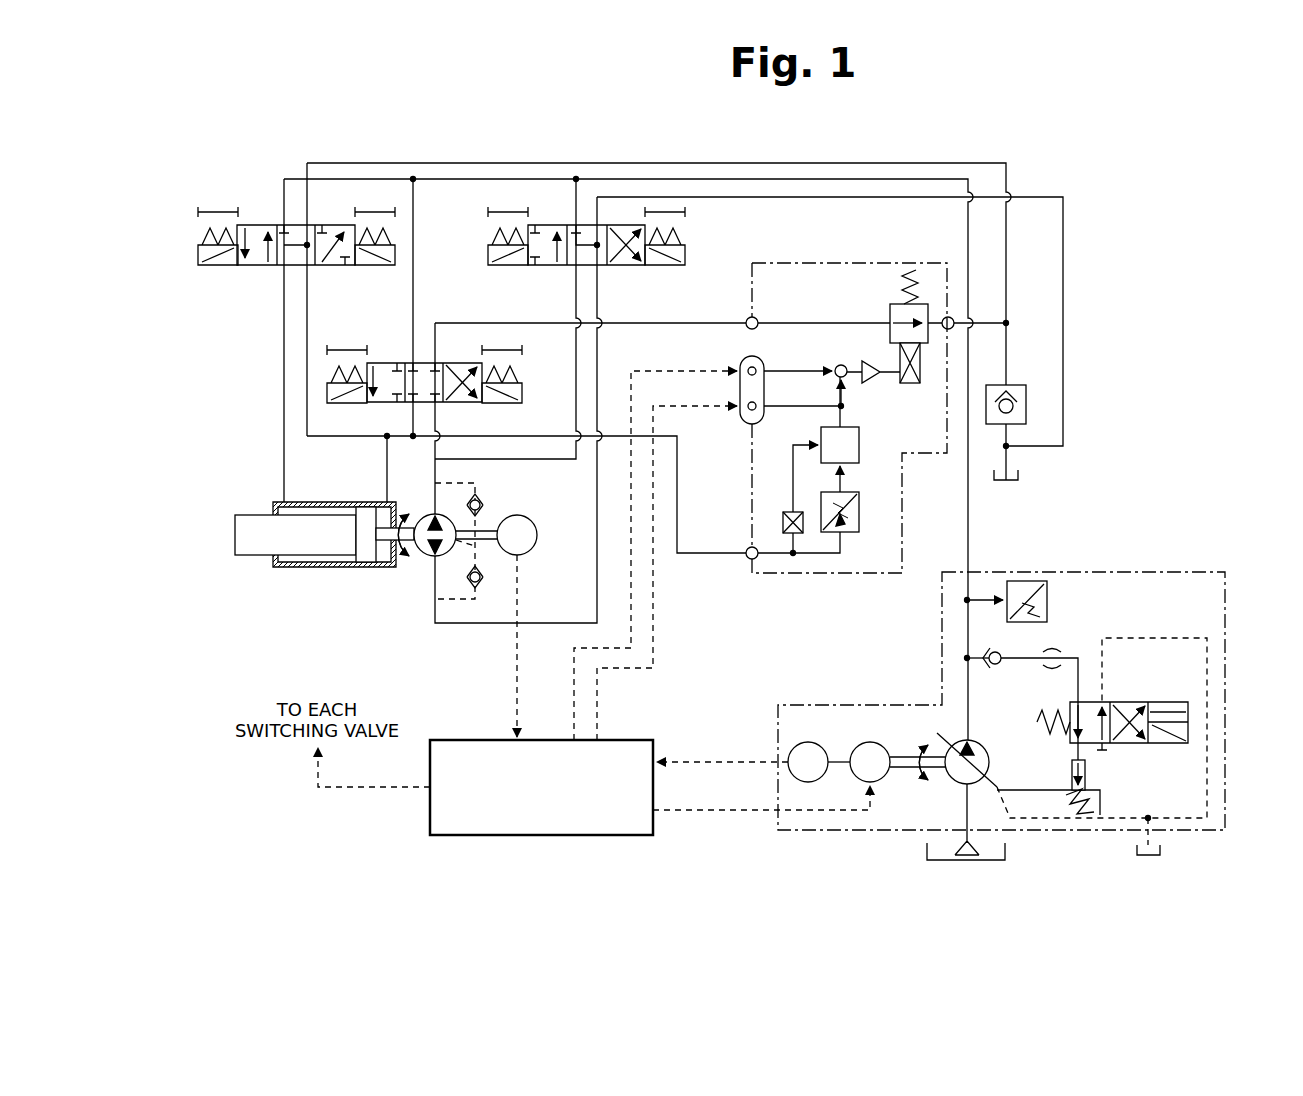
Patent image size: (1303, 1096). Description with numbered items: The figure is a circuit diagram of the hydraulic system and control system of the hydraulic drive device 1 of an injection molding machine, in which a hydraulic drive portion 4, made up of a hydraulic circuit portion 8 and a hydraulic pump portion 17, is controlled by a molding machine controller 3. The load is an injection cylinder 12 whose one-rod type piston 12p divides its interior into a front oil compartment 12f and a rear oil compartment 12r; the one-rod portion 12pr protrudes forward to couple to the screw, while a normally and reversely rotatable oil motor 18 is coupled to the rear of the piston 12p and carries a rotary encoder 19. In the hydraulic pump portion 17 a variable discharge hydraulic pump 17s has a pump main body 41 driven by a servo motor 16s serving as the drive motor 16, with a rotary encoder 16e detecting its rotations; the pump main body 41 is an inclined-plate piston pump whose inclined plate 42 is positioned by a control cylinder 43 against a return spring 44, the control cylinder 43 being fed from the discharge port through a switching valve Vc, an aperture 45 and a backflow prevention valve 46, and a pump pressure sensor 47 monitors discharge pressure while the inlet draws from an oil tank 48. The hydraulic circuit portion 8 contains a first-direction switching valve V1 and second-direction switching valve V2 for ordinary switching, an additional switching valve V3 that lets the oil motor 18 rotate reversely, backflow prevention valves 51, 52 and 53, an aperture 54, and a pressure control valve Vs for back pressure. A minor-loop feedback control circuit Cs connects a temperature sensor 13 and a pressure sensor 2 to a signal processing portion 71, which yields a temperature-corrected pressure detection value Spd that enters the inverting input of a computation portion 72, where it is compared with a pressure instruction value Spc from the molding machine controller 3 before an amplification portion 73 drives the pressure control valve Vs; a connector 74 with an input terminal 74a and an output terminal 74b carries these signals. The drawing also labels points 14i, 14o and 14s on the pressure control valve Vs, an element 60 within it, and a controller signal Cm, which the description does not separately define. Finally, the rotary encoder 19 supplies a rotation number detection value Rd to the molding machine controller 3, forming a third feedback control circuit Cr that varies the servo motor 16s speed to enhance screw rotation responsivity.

The hydraulic drive device 1 is at (1137, 297).
The pressure sensor 2 is at (861, 516).
The molding machine controller 3 is at (445, 738).
The hydraulic drive portion 4 is at (1142, 447).
The hydraulic circuit portion 8 is at (1075, 218).
The injection cylinder 12 is at (314, 555).
The front oil compartment 12f is at (290, 568).
The piston 12p is at (363, 505).
The one-rod portion 12pr is at (258, 514).
The rear oil compartment 12r is at (383, 560).
The temperature sensor 13 is at (783, 523).
The input port 14i is at (748, 320).
The output port 14o is at (949, 317).
The signal port 14s is at (750, 560).
The drive motor 16 is at (867, 742).
The rotary encoder 16e is at (785, 772).
The servo motor 16s is at (880, 784).
The hydraulic pump portion 17 is at (1207, 572).
The variable discharge hydraulic pump 17s is at (1228, 676).
The oil motor 18 is at (424, 556).
The rotary encoder 19 is at (536, 523).
The pump main body 41 is at (980, 745).
The inclined plate 42 is at (995, 778).
The control cylinder 43 is at (1087, 775).
The return spring 44 is at (1076, 820).
The aperture 45 is at (1056, 652).
The backflow prevention valve 46 is at (1002, 666).
The pump pressure sensor 47 is at (1050, 605).
The oil tank 48 is at (1020, 474).
The backflow prevention valve 51 is at (480, 500).
The backflow prevention valve 52 is at (481, 583).
The backflow prevention valve 53 is at (1015, 385).
The aperture 54 is at (314, 300).
The proportional flow control valve 60 is at (893, 307).
The signal processing portion 71 is at (861, 440).
The computation portion 72 is at (838, 364).
The amplification portion 73 is at (870, 361).
The connector 74 is at (716, 404).
The input terminal 74a is at (742, 368).
The output terminal 74b is at (744, 405).
The first-direction switching valve V1 is at (410, 337).
The second-direction switching valve V2 is at (238, 276).
The additional switching valve V3 is at (696, 241).
The pressure control valve Vs is at (855, 262).
The switching valve Vc is at (1120, 745).
The minor-loop feedback control circuit Cs is at (875, 470).
The molding machine control signal Cm is at (662, 664).
The third feedback control circuit Cr is at (675, 830).
The rotation number detection value Rd is at (516, 650).
The pressure instruction value Spc is at (573, 662).
The pressure detection value Spd is at (628, 672).